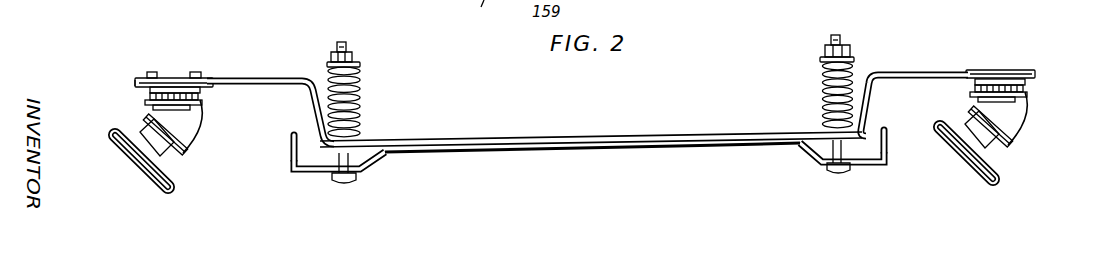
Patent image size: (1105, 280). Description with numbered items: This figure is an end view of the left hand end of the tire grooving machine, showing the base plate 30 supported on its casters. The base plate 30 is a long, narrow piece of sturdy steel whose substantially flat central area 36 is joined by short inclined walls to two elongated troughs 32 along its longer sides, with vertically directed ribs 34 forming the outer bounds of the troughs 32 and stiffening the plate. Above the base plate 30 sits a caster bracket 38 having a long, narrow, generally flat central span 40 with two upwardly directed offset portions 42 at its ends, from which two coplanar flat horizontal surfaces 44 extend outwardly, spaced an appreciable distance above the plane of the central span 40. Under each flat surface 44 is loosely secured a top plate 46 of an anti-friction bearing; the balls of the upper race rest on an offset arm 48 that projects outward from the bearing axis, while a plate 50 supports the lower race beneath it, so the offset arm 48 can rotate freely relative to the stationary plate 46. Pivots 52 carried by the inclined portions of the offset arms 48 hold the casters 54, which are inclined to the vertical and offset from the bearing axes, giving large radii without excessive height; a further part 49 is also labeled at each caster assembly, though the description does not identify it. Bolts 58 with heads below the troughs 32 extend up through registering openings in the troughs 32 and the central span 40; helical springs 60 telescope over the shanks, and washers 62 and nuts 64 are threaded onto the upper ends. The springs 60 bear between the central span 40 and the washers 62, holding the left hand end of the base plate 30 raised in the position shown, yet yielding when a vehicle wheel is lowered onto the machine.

The base plate 30 is at (695, 150).
The elongated troughs 32 is at (313, 172).
The vertically directed ribs 34 is at (290, 143).
The central area 36 is at (493, 148).
The caster bracket 38 is at (568, 130).
The central span 40 is at (437, 138).
The upwardly directed offset portions 42 is at (318, 83).
The flat horizontal surfaces 44 is at (237, 78).
The top plates 46 is at (134, 83).
The offset arms 48 is at (201, 105).
The axle block 49 is at (190, 157).
The plates 50 is at (182, 112).
The pivots 52 is at (180, 134).
The casters 54 is at (129, 154).
The bolts 58 is at (347, 43).
The helical springs 60 is at (359, 103).
The washers 62 is at (361, 66).
The nuts 64 is at (352, 56).